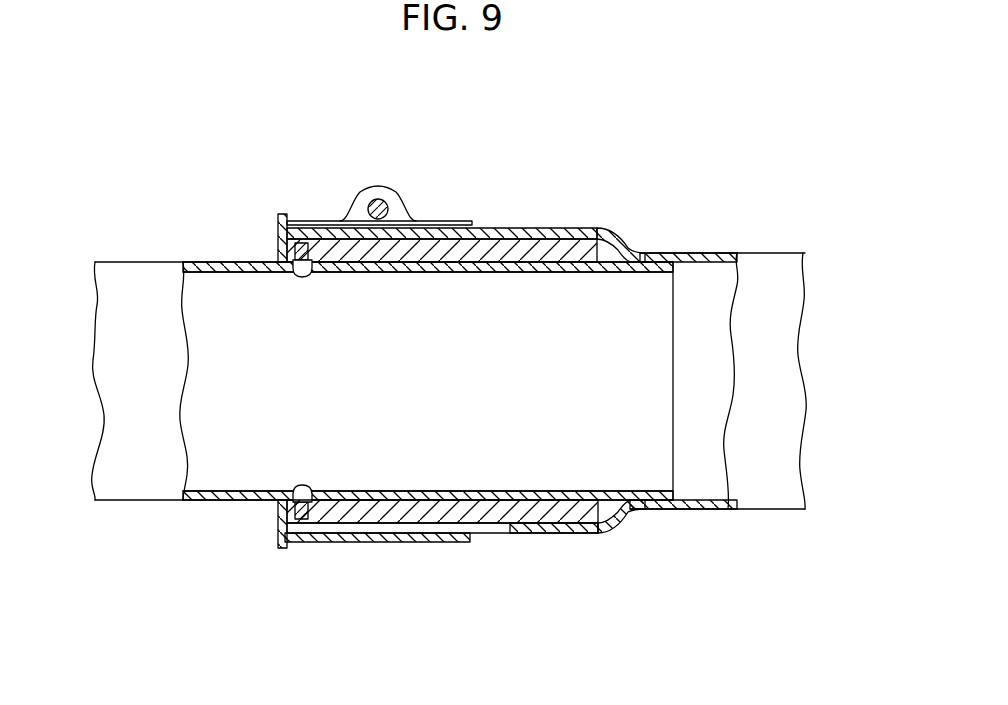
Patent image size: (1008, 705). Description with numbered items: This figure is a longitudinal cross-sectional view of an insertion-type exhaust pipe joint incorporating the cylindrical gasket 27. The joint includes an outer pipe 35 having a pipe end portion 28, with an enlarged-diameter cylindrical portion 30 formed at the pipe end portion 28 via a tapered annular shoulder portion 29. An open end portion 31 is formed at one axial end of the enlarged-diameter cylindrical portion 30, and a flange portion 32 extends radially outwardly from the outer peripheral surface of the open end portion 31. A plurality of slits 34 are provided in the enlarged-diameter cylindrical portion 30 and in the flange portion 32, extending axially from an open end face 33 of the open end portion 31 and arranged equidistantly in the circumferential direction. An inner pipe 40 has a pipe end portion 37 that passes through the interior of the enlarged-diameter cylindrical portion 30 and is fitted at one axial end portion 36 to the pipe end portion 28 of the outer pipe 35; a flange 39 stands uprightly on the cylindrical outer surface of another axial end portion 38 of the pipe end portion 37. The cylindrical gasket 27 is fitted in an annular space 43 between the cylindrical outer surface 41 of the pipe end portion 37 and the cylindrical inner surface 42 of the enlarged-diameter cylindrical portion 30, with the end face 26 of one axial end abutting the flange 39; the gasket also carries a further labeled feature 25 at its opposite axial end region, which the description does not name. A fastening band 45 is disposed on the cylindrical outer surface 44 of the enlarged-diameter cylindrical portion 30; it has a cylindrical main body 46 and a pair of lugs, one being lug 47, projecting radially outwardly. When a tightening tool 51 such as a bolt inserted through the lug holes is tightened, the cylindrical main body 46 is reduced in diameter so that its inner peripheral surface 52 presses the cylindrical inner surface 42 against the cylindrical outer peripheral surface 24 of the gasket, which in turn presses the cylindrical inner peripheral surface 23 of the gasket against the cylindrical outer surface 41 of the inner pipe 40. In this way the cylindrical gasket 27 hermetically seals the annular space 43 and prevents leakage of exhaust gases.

The cylindrical inner peripheral surface 23 is at (588, 533).
The cylindrical outer peripheral surface 24 is at (354, 221).
The bent end portion of outer sleeve 25 is at (598, 242).
The end face 26 is at (301, 243).
The cylindrical gasket 27 is at (578, 245).
The pipe end portion 28 is at (772, 260).
The tapered annular shoulder portion 29 is at (624, 513).
The enlarged-diameter cylindrical portion 30 is at (538, 235).
The open end portion 31 is at (280, 214).
The flange portion 32 is at (283, 549).
The open end face 33 is at (277, 234).
The slits 34 is at (502, 531).
The outer pipe 35 is at (761, 521).
The one axial end portion 36 is at (655, 258).
The pipe end portion 37 is at (392, 496).
The another axial end portion 38 is at (296, 497).
The flange 39 is at (304, 513).
The inner pipe 40 is at (155, 522).
The cylindrical outer surface 41 is at (457, 230).
The cylindrical inner surface 42 is at (573, 517).
The annular space 43 is at (446, 520).
The cylindrical outer surface 44 is at (503, 242).
The fastening band 45 is at (351, 537).
The cylindrical main body 46 is at (462, 537).
The lug 47 is at (398, 204).
The tightening tool 51 is at (380, 202).
The inner peripheral surface 52 is at (454, 241).